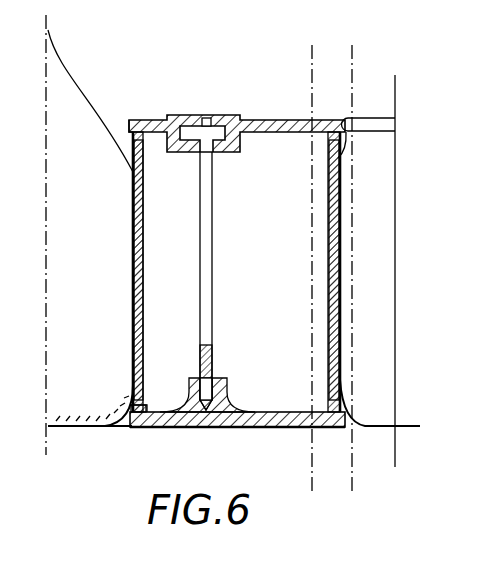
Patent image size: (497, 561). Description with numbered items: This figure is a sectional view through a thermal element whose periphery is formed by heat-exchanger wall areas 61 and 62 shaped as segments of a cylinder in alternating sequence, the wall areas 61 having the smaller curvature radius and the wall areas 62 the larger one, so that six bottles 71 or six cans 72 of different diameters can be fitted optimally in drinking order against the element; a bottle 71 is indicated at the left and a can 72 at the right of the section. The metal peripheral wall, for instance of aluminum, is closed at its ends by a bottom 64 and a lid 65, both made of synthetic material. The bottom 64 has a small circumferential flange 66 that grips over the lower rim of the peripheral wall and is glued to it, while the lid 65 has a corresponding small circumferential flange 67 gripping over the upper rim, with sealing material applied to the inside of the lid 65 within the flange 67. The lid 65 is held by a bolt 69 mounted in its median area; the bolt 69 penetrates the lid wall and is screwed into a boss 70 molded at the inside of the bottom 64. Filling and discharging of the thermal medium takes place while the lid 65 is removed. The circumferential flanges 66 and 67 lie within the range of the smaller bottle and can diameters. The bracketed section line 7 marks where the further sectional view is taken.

The section line 7- 7 is at (352, 45).
The heat-exchanger wall area 61 is at (132, 258).
The heat-exchanger wall area 62 is at (340, 256).
The bottom 64 is at (282, 428).
The lid 65 is at (272, 120).
The circumferential flange 66 is at (136, 428).
The circumferential flange 67 is at (131, 120).
The bolt 69 is at (212, 225).
The boss 70 is at (225, 405).
The bottle 71 is at (103, 400).
The can 72 is at (368, 165).